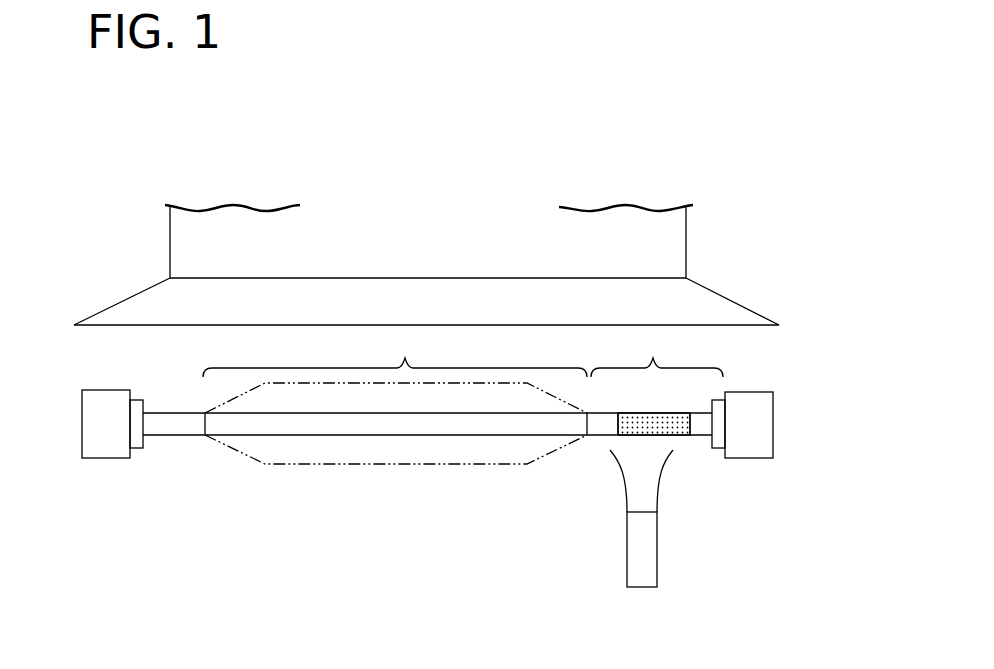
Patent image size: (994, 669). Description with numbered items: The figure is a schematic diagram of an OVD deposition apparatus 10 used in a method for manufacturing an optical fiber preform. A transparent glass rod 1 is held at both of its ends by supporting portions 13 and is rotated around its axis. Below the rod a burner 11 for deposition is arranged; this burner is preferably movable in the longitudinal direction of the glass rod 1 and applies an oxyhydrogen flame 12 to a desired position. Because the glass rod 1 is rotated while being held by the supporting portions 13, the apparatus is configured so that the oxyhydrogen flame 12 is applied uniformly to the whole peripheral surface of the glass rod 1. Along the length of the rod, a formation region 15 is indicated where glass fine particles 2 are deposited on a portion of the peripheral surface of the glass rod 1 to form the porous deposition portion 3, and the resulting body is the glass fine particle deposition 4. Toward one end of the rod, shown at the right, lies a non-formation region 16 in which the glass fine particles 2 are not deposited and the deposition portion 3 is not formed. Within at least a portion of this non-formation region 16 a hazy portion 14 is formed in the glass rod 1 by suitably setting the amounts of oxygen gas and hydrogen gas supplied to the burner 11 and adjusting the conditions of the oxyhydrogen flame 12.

The glass rod 1 is at (176, 413).
The glass fine particles 2 is at (478, 458).
The deposition portion 3 is at (393, 465).
The glass fine particle deposition 4 is at (390, 460).
The OVD deposition apparatus 10 is at (794, 361).
The burner for deposition 11 is at (657, 545).
The oxyhydrogen flame 12 is at (623, 480).
The supporting portions 13 is at (82, 437).
The hazy portion 14 is at (683, 435).
The formation region 15 is at (395, 353).
The non-formation region 16 is at (657, 353).